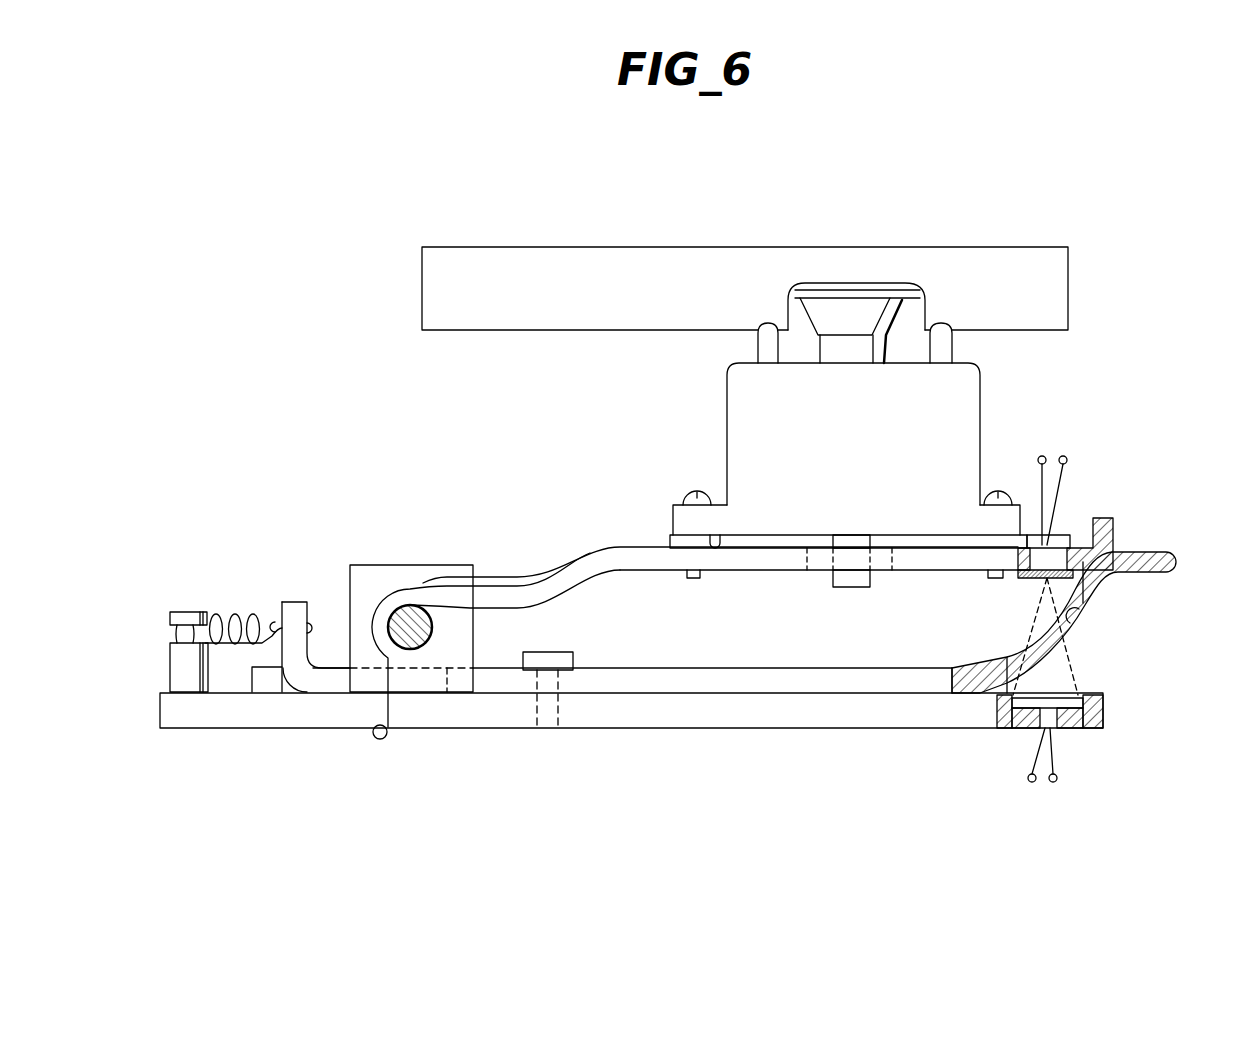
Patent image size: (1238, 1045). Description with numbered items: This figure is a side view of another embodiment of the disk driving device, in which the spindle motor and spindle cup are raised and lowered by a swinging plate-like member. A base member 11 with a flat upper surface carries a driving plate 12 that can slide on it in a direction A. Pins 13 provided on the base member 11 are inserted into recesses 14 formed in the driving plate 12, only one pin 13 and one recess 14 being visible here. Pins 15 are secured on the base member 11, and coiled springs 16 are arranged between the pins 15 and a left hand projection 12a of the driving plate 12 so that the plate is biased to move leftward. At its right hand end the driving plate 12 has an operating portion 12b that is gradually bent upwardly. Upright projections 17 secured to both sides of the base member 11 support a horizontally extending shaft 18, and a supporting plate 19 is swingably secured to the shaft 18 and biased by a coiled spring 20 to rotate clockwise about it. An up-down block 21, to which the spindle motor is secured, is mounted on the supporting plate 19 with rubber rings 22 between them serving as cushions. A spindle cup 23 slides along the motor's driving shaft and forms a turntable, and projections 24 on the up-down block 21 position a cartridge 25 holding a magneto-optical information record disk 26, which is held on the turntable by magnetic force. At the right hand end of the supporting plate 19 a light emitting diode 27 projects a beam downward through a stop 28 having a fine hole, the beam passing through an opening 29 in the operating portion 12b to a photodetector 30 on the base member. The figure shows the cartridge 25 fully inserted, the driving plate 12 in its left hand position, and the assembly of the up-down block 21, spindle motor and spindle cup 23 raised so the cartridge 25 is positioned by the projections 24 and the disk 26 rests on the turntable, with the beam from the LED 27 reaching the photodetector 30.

The base member 11 is at (765, 728).
The driving plate 12 is at (865, 687).
The left hand projection 12a is at (295, 602).
The operating portion 12b is at (1135, 585).
The pin 13 is at (560, 652).
The recess 14 is at (455, 680).
The pin 15 is at (182, 612).
The coiled spring 16 is at (232, 613).
The upright projection 17 is at (372, 565).
The shaft 18 is at (408, 637).
The supporting plate 19 is at (630, 553).
The coiled spring 20 is at (495, 577).
The up-down block 21 is at (965, 398).
The rubber ring 22 is at (718, 541).
The spindle cup 23 is at (870, 300).
The projection 24 is at (765, 330).
The cartridge 25 is at (495, 247).
The magneto-optical information record disk 26 is at (835, 285).
The light emitting diode 27 is at (1068, 535).
The stop 28 is at (1015, 578).
The opening 29 is at (1080, 622).
The photodetector 30 is at (1057, 690).